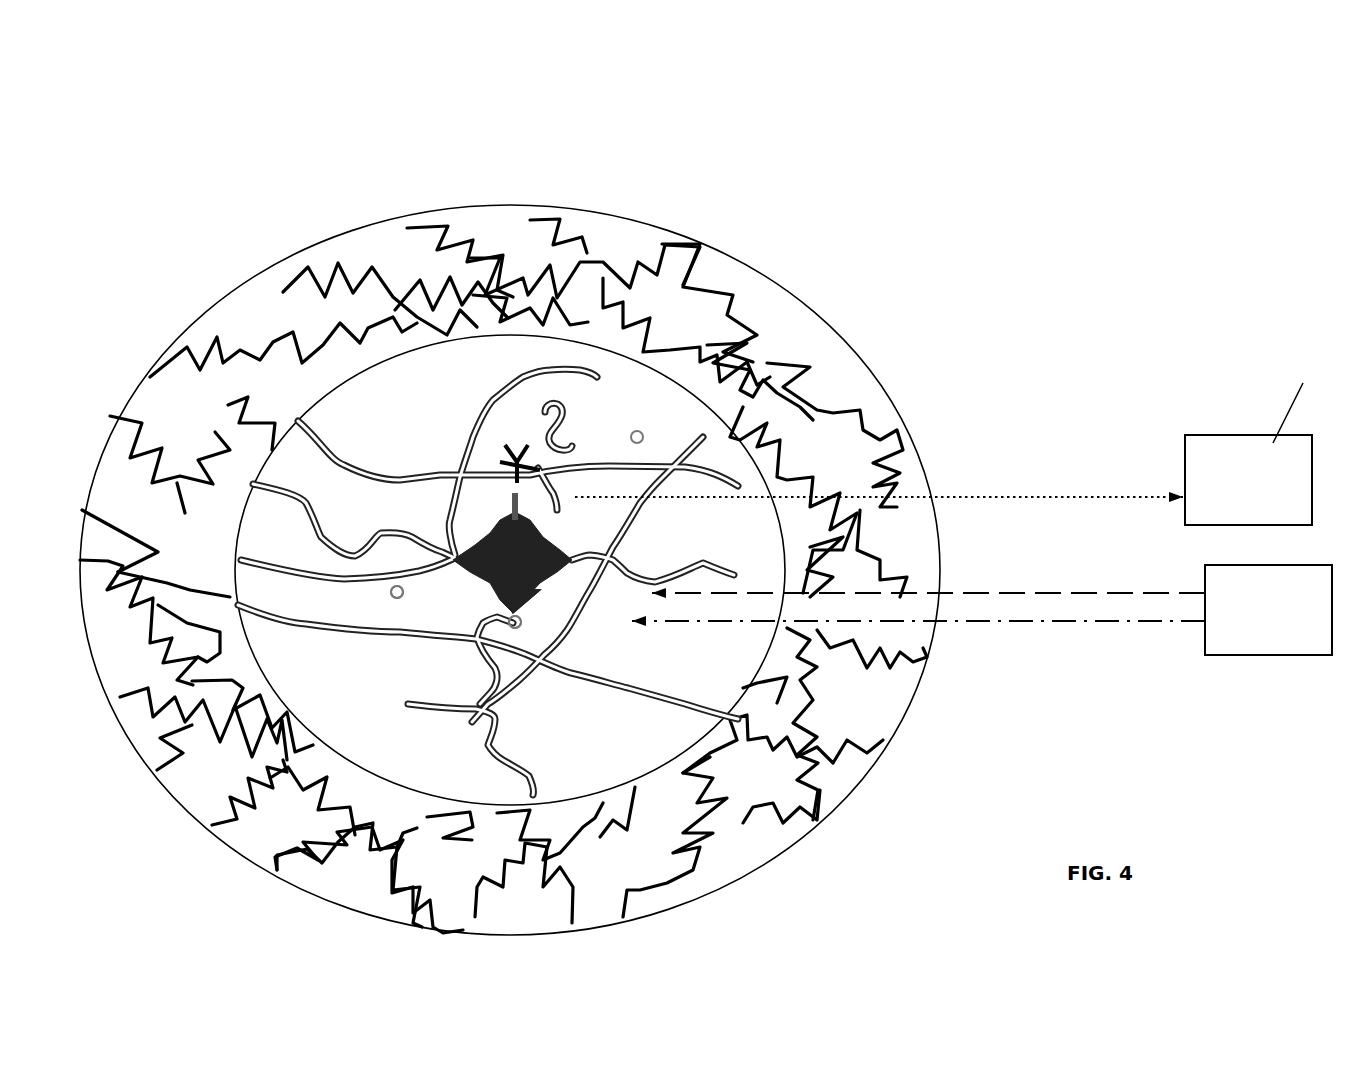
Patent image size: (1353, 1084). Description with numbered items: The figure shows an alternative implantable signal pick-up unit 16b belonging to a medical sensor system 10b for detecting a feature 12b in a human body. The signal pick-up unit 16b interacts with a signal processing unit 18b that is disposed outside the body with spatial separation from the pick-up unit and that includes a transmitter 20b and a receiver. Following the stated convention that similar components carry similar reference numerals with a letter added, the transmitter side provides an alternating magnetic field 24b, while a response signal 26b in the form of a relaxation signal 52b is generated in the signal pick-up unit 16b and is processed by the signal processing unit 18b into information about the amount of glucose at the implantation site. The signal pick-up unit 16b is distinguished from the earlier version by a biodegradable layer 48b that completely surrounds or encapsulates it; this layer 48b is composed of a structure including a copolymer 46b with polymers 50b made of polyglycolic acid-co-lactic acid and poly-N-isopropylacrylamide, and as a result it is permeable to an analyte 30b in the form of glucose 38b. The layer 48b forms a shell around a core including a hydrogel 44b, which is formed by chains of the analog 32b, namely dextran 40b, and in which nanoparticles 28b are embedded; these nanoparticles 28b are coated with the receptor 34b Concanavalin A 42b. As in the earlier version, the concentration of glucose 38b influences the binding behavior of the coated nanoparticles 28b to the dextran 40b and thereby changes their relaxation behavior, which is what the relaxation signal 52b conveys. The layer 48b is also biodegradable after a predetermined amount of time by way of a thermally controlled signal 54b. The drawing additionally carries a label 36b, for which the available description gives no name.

The medical sensor system 10b is at (1065, 325).
The feature 12b is at (643, 433).
The signal pick-up unit 16b is at (213, 278).
The signal processing unit 18b is at (1260, 365).
The transmitter 20b is at (1272, 640).
The alternating magnetic field 24b is at (1005, 590).
The response signal 26b is at (553, 477).
The nanoparticles 28b is at (522, 545).
The analyte 30b is at (399, 586).
The analog 32b is at (517, 618).
The receptor 34b is at (518, 598).
The outer region 36b is at (275, 213).
The glucose 38b is at (399, 586).
The dextran 40b is at (517, 618).
The Concanavalin A 42b is at (518, 598).
The hydrogel 44b is at (280, 480).
The copolymer 46b is at (683, 287).
The biodegradable layer 48b is at (528, 250).
The polymers 50b is at (673, 260).
The relaxation signal 52b is at (1052, 496).
The thermally controlled signal 54b is at (1025, 628).